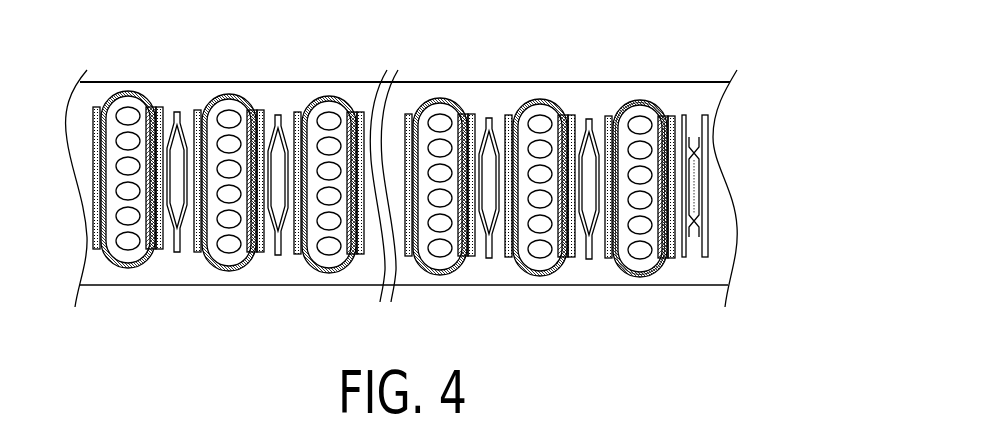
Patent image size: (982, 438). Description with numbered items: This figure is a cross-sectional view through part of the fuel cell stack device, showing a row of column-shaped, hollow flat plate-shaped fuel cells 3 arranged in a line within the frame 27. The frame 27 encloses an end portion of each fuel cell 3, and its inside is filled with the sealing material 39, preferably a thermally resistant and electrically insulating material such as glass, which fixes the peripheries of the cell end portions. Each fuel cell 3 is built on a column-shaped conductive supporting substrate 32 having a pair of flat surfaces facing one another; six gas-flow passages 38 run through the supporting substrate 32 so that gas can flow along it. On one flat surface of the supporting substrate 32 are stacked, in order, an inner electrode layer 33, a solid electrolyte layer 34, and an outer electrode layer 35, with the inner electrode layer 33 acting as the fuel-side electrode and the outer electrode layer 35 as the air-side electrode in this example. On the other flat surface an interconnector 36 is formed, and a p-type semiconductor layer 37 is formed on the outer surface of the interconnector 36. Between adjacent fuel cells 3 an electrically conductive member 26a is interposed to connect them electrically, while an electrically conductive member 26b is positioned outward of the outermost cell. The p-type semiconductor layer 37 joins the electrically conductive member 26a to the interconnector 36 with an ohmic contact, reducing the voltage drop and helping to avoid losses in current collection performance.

The fuel cell 3 is at (408, 93).
The frame 27 is at (228, 82).
The sealing material 39 is at (392, 102).
The electrically conductive member 26a is at (589, 103).
The electrically conductive member 26b is at (683, 114).
The conductive supporting substrate 32 is at (645, 268).
The inner electrode layer 33 is at (620, 117).
The solid electrolyte layer 34 is at (617, 120).
The outer electrode layer 35 is at (611, 113).
The interconnector 36 is at (665, 120).
The p-type semiconductor layer 37 is at (671, 258).
The gas-flow passage 38 is at (635, 258).